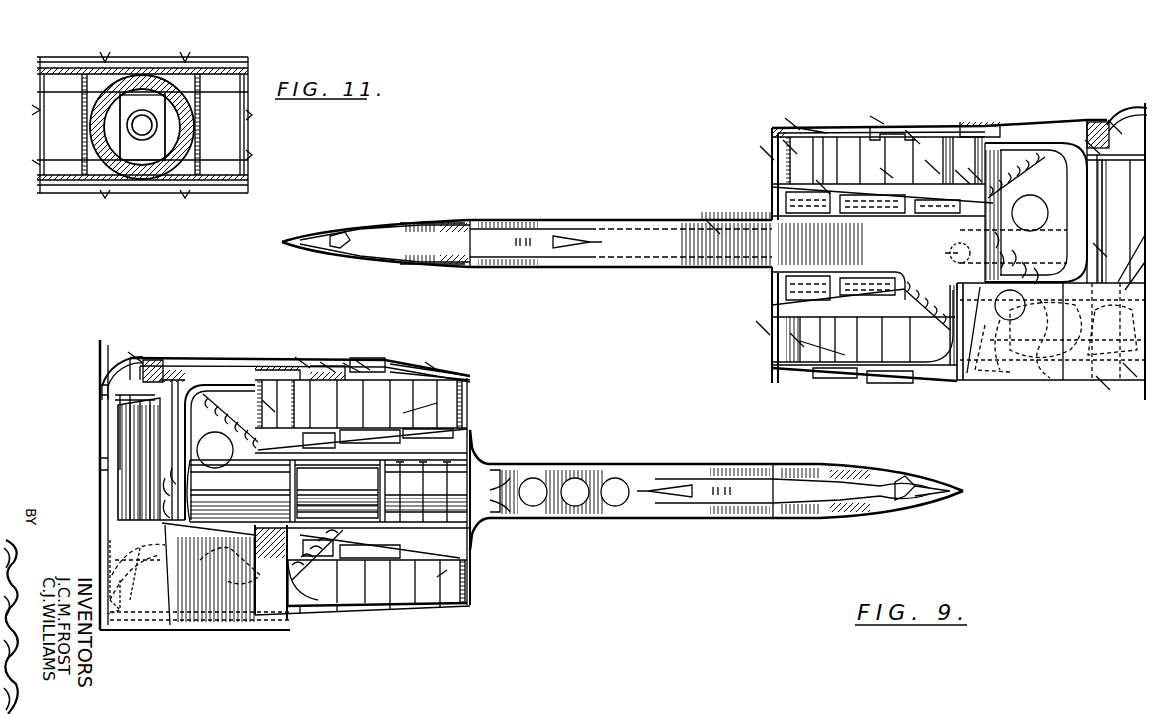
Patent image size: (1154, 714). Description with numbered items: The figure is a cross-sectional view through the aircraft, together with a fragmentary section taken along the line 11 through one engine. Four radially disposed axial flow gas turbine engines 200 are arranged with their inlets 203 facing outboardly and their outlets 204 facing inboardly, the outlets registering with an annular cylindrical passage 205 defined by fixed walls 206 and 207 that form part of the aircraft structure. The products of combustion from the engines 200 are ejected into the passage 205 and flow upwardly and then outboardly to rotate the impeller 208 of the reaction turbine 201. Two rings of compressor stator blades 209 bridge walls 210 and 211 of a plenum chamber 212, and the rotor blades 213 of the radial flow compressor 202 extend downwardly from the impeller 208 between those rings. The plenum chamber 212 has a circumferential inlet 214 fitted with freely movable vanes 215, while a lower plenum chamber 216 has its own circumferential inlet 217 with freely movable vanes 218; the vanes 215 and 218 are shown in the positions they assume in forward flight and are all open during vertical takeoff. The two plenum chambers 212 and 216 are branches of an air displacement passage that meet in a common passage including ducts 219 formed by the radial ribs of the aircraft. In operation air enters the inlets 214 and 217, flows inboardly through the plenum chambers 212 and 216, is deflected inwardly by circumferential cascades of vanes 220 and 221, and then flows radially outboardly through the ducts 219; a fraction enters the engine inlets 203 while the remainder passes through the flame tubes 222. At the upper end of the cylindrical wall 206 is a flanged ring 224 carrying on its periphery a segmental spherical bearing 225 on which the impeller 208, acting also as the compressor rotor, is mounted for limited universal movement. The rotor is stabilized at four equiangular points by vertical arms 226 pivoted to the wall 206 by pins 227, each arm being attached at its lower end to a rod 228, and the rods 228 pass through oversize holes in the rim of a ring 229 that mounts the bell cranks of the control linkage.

In FIG. 9, the section line 11— 11 is at (478, 446).
In FIG. 11, the axial flow gas turbine engine 200 is at (133, 180).
In FIG. 9, the axial flow gas turbine engine 200 is at (327, 491).
In FIG. 9, the reaction turbine 201 is at (962, 177).
In FIG. 9, the radial flow compressor 202 is at (877, 120).
In FIG. 11, the engine inlet 203 is at (115, 147).
In FIG. 9, the engine inlet 203 is at (490, 467).
In FIG. 9, the engine outlet 204 is at (168, 523).
In FIG. 9, the annular cylindrical passage 205 is at (300, 357).
In FIG. 9, the cylindrical wall 206 is at (1000, 195).
In FIG. 9, the fixed wall 207 is at (975, 175).
In FIG. 9, the impeller 208 is at (887, 173).
In FIG. 9, the compressor stator blades 209 is at (913, 137).
In FIG. 9, the plenum chamber wall 210 is at (793, 125).
In FIG. 9, the plenum chamber wall 211 is at (823, 187).
In FIG. 9, the plenum chamber 212 is at (790, 147).
In FIG. 9, the compressor rotor blades 213 is at (933, 167).
In FIG. 9, the circumferential inlet 214 is at (759, 156).
In FIG. 9, the freely movable vanes 215 is at (827, 133).
In FIG. 9, the plenum chamber 216 is at (797, 340).
In FIG. 9, the circumferential inlet 217 is at (758, 330).
In FIG. 9, the freely movable vanes 218 is at (843, 348).
In FIG. 11, the ducts 219 is at (210, 137).
In FIG. 9, the ducts 219 is at (713, 227).
In FIG. 9, the circumferential cascade of vanes 220 is at (1060, 223).
In FIG. 9, the circumferential cascade of vanes 221 is at (943, 313).
In FIG. 9, the flame tubes 222 is at (540, 237).
In FIG. 9, the flanged ring 224 is at (1117, 127).
In FIG. 9, the segmental spherical bearing 225 is at (132, 353).
In FIG. 9, the vertical arms 226 is at (1100, 250).
In FIG. 9, the pins 227 is at (1093, 147).
In FIG. 9, the rod 228 is at (1103, 383).
In FIG. 9, the ring 229 is at (1130, 370).